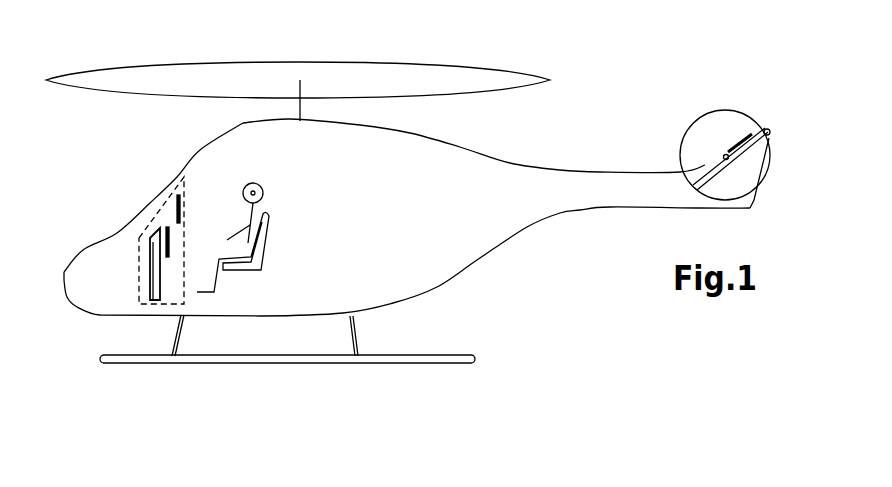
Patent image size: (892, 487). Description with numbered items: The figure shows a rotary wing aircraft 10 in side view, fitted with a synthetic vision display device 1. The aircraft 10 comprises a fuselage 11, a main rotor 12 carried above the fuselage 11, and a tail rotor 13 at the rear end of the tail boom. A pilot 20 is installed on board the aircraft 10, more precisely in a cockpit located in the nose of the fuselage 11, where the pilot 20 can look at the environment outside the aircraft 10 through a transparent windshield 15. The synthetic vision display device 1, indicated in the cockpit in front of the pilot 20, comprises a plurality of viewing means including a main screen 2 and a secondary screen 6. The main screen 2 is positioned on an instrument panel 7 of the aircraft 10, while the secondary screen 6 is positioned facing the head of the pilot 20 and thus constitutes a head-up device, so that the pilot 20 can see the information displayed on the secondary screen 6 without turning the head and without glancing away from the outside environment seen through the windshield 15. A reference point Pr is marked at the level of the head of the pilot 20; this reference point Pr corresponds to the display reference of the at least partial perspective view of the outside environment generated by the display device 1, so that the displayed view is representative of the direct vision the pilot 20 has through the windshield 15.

The rotary wing aircraft 10 is at (72, 343).
The fuselage 11 is at (433, 287).
The main rotor 12 is at (484, 78).
The tail rotor 13 is at (720, 128).
The transparent windshield 15 is at (167, 182).
The synthetic vision display device 1 is at (138, 272).
The main screen 2 is at (168, 247).
The secondary screen 6 is at (182, 207).
The instrument panel 7 is at (148, 287).
The pilot 20 is at (250, 240).
The reference point Pr is at (263, 193).